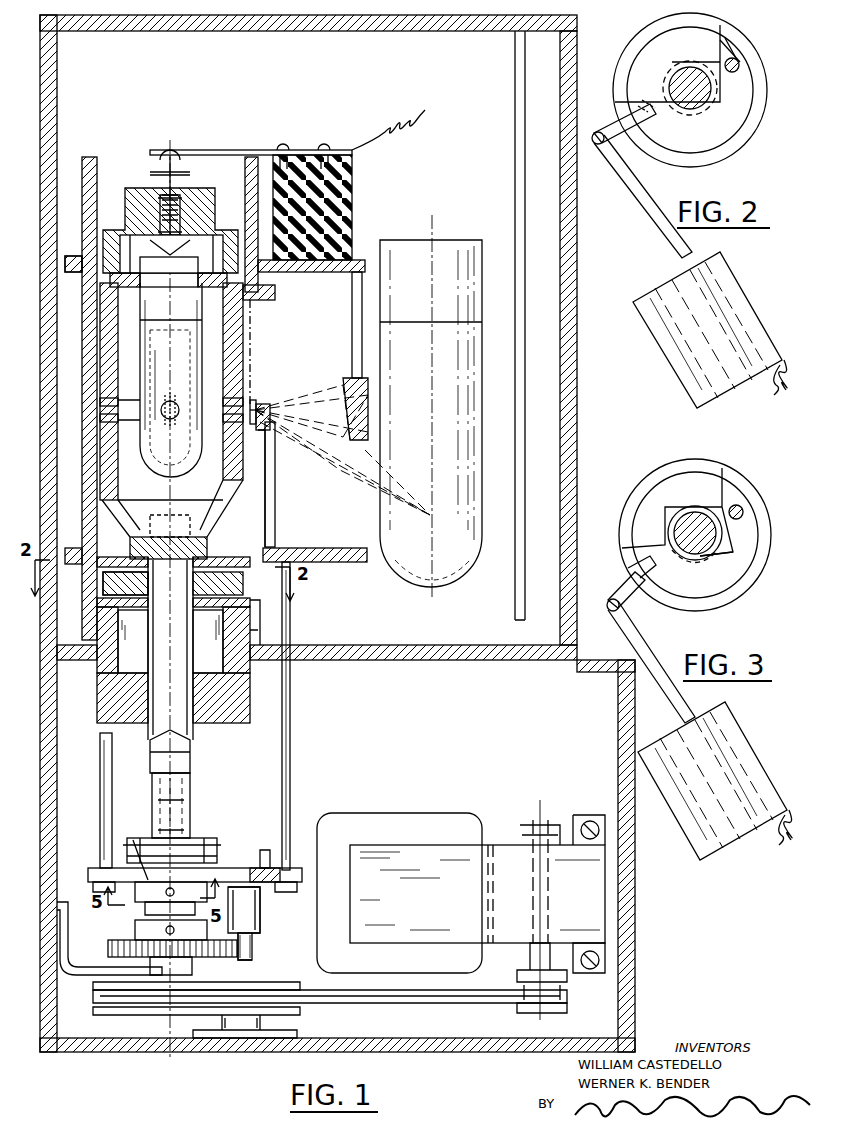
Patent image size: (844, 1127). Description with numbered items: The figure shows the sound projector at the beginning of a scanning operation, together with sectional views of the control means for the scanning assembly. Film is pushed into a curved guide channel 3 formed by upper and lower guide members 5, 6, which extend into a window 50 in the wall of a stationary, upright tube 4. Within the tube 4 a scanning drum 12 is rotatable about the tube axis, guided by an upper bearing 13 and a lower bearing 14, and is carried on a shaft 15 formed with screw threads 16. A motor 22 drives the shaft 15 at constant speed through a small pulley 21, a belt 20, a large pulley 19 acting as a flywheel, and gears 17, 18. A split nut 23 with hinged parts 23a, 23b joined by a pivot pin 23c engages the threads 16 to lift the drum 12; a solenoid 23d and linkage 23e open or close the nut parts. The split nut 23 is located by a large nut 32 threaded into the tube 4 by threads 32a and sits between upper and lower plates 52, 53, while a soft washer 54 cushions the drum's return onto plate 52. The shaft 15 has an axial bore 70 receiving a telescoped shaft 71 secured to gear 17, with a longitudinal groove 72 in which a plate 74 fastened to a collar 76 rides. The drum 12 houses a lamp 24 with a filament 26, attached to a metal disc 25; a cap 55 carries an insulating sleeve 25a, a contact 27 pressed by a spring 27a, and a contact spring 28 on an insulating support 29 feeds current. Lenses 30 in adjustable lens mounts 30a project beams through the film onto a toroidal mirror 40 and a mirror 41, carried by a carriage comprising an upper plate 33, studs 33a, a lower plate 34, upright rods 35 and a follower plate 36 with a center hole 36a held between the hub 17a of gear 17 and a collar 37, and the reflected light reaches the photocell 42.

In FIG. 1, the guide channel 3 is at (255, 408).
In FIG. 1, the tube 4 is at (90, 178).
In FIG. 1, the upper guide member 5 is at (262, 298).
In FIG. 1, the lower guide member 6 is at (262, 415).
In FIG. 1, the scanning drum 12 is at (248, 335).
In FIG. 1, the upper bearing 13 is at (110, 279).
In FIG. 1, the lower bearing 14 is at (135, 692).
In FIG. 2, the shaft 15 is at (680, 102).
In FIG. 3, the shaft 15 is at (694, 512).
In FIG. 1, the screw threads 16 is at (210, 652).
In FIG. 2, the screw threads 16 is at (706, 112).
In FIG. 3, the screw threads 16 is at (676, 526).
In FIG. 1, the gear 17 is at (110, 950).
In FIG. 1, the hub 17a is at (136, 927).
In FIG. 1, the gear 18 is at (255, 946).
In FIG. 1, the large pulley 19 is at (326, 1002).
In FIG. 1, the belt 20 is at (448, 1000).
In FIG. 1, the small pulley 21 is at (545, 1005).
In FIG. 1, the motor 22 is at (585, 903).
In FIG. 1, the split nut 23 is at (233, 588).
In FIG. 2, the split nut 23 is at (608, 60).
In FIG. 3, the split nut 23 is at (755, 479).
In FIG. 2, the nut part 23a is at (650, 36).
In FIG. 3, the nut part 23a is at (650, 480).
In FIG. 2, the nut part 23b is at (745, 108).
In FIG. 3, the nut part 23b is at (738, 573).
In FIG. 2, the pivot pin 23c is at (737, 58).
In FIG. 3, the pivot pin 23c is at (742, 512).
In FIG. 2, the solenoid 23d is at (660, 312).
In FIG. 3, the solenoid 23d is at (732, 750).
In FIG. 2, the linkage 23e is at (628, 145).
In FIG. 3, the linkage 23e is at (632, 598).
In FIG. 1, the lamp 24 is at (150, 355).
In FIG. 1, the metal disc 25 is at (132, 288).
In FIG. 1, the insulating sleeve 25a is at (150, 222).
In FIG. 1, the filament 26 is at (165, 432).
In FIG. 1, the contact 27 is at (160, 178).
In FIG. 1, the spring 27a is at (185, 200).
In FIG. 1, the contact spring 28 is at (200, 150).
In FIG. 1, the insulating support 29 is at (332, 182).
In FIG. 1, the lenses 30 is at (118, 418).
In FIG. 1, the lens mount 30a is at (228, 430).
In FIG. 1, the large nut 32 is at (250, 705).
In FIG. 1, the threads 32a is at (258, 642).
In FIG. 1, the upper plate 33 is at (303, 272).
In FIG. 1, the stud 33a is at (355, 330).
In FIG. 1, the lower plate 34 is at (320, 550).
In FIG. 1, the upright rods 35 is at (100, 778).
In FIG. 1, the follower plate 36 is at (90, 872).
In FIG. 1, the center hole 36a is at (140, 843).
In FIG. 1, the collar 37 is at (220, 852).
In FIG. 1, the toroidal mirror 40 is at (346, 388).
In FIG. 1, the mirror 41 is at (272, 508).
In FIG. 1, the photocell 42 is at (458, 512).
In FIG. 1, the window 50 is at (255, 358).
In FIG. 1, the upper plate 52 is at (100, 567).
In FIG. 1, the lower plate 53 is at (100, 600).
In FIG. 1, the soft washer 54 is at (132, 552).
In FIG. 1, the cap 55 is at (233, 208).
In FIG. 1, the axial bore 70 is at (90, 262).
In FIG. 1, the shaft 71 is at (192, 800).
In FIG. 1, the longitudinal groove 72 is at (192, 826).
In FIG. 1, the plate 74 is at (210, 910).
In FIG. 1, the collar 76 is at (205, 882).